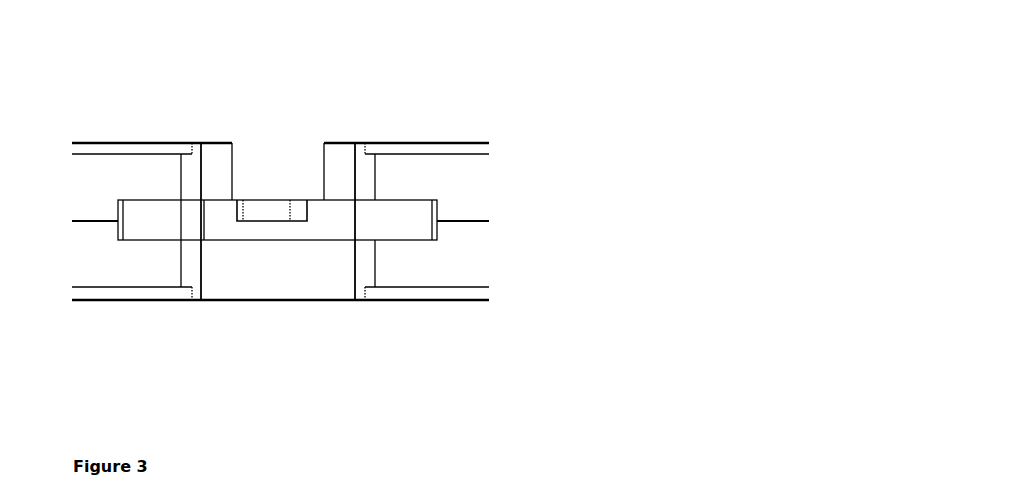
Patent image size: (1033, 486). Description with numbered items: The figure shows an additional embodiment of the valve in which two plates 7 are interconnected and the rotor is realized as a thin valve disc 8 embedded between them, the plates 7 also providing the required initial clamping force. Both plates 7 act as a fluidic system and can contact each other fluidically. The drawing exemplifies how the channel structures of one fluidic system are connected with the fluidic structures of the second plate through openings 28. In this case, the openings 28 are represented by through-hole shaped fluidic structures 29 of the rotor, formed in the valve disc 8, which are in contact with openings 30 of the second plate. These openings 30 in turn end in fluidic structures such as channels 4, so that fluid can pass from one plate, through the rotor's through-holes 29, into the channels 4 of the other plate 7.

The channels 4 is at (116, 108).
The plates 7 is at (481, 177).
The valve disc 8 is at (367, 231).
The openings 28 is at (205, 278).
The through-holes shaped fluidic structures 29 is at (194, 184).
The openings of the second plate 30 is at (192, 122).